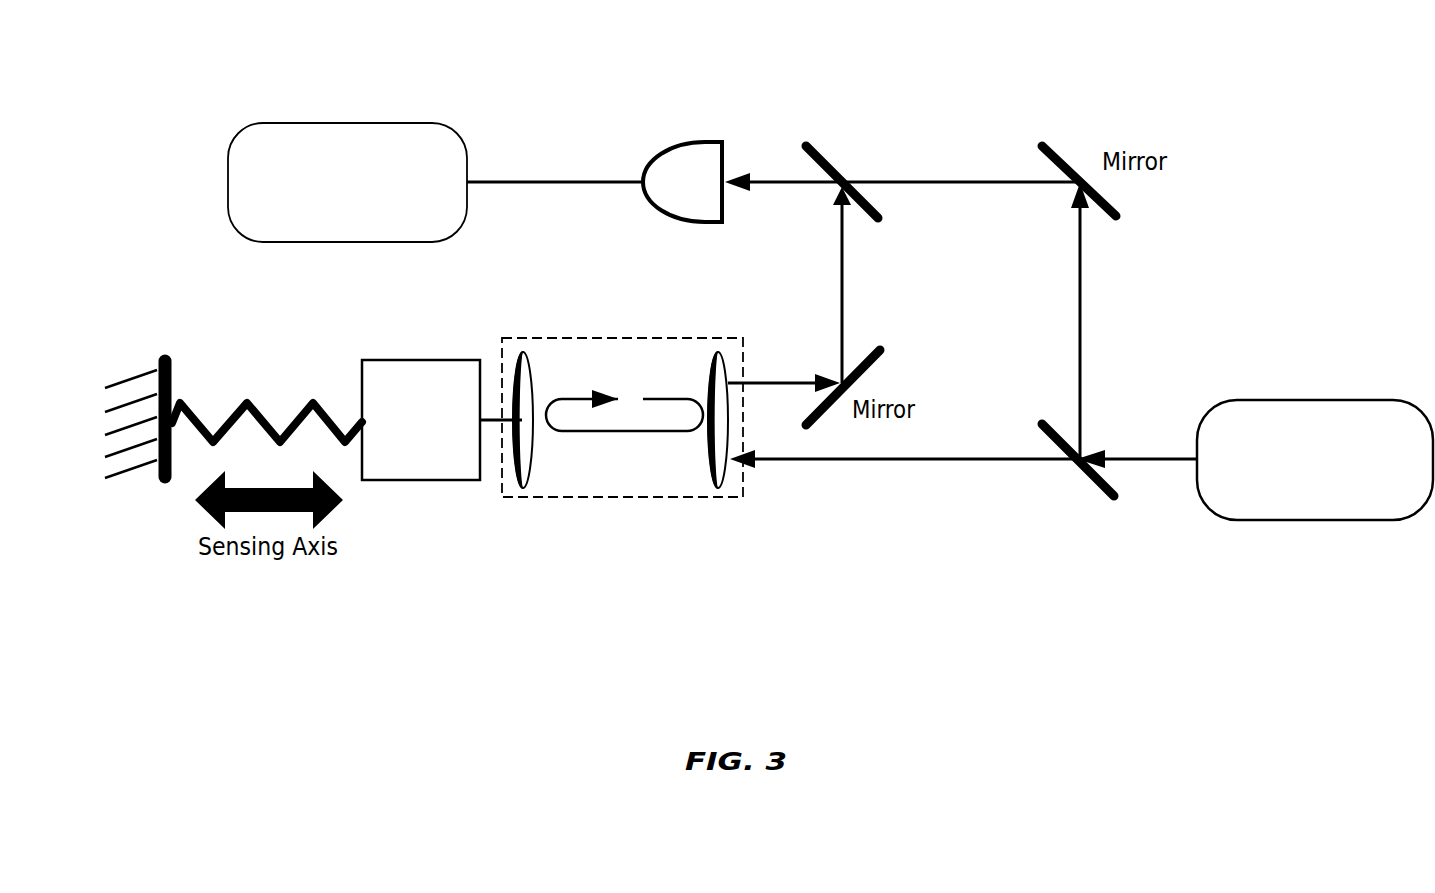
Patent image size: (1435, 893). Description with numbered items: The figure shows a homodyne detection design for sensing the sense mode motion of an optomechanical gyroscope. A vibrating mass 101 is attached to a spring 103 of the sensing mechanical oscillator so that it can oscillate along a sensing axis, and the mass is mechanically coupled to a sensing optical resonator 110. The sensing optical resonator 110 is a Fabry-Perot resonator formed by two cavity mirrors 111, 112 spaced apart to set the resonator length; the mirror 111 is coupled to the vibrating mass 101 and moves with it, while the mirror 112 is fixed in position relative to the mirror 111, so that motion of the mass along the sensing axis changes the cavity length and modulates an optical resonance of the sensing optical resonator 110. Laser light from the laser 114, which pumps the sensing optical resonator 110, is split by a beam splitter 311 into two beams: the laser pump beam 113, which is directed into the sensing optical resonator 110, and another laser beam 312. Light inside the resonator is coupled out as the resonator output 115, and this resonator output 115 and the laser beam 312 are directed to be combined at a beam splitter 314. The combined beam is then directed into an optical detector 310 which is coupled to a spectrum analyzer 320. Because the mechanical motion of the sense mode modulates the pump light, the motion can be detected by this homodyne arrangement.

The vibrating mass 101 is at (418, 367).
The spring 103 is at (308, 402).
The sensing optical resonator 110 is at (642, 498).
The cavity mirror 111 is at (531, 367).
The cavity mirror 112 is at (726, 367).
The laser pump beam 113 is at (940, 462).
The laser 114 is at (1330, 491).
The resonator output 115 is at (843, 243).
The optical detector 310 is at (1153, 459).
The beam splitter 311 is at (1102, 501).
The laser beam 312 is at (1082, 273).
The beam splitter 314 is at (839, 140).
The spectrum analyzer 320 is at (373, 207).